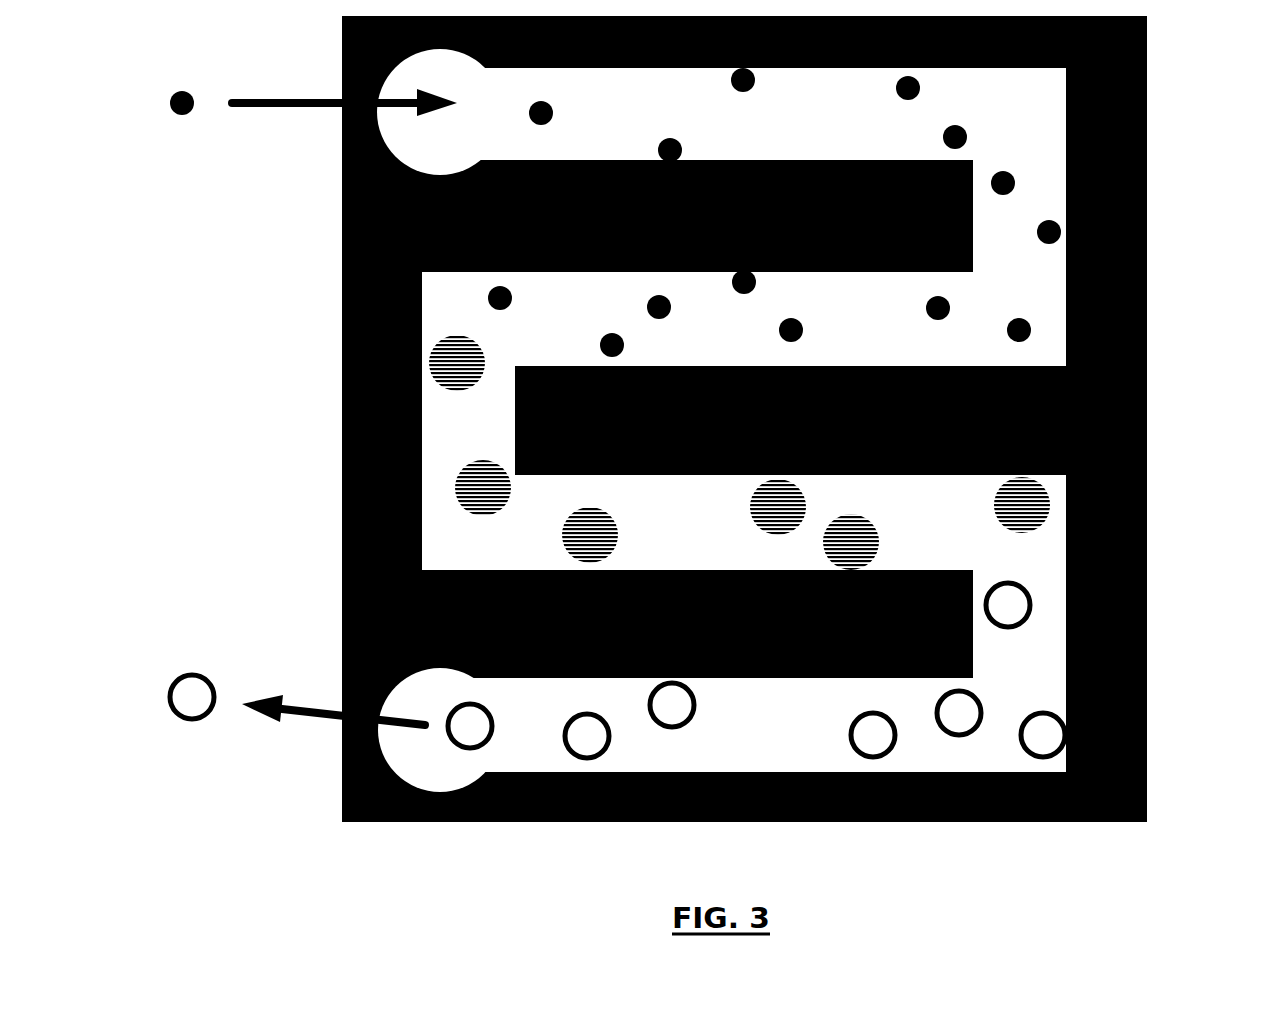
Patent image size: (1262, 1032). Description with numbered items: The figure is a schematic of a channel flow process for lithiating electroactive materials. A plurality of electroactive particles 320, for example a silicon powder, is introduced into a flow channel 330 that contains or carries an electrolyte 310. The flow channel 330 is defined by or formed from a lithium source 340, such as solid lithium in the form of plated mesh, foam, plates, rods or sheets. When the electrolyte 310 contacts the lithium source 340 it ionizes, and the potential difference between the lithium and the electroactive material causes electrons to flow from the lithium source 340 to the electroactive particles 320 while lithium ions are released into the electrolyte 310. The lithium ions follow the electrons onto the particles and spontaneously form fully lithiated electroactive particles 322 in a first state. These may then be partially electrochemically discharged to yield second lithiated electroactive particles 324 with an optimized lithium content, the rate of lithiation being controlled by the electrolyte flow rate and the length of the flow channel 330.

The electrolyte 310 is at (866, 139).
The electroactive particles 320 is at (553, 110).
The fully lithiated electroactive particles 322 is at (752, 513).
The second lithiated electroactive particles 324 is at (851, 733).
The flow channel 330 is at (1037, 101).
The lithium source 340 is at (342, 305).